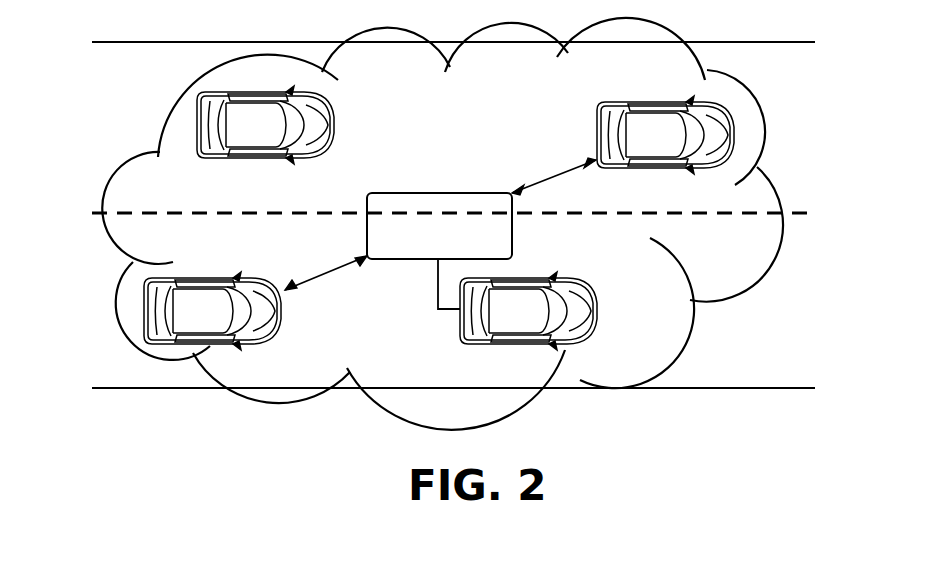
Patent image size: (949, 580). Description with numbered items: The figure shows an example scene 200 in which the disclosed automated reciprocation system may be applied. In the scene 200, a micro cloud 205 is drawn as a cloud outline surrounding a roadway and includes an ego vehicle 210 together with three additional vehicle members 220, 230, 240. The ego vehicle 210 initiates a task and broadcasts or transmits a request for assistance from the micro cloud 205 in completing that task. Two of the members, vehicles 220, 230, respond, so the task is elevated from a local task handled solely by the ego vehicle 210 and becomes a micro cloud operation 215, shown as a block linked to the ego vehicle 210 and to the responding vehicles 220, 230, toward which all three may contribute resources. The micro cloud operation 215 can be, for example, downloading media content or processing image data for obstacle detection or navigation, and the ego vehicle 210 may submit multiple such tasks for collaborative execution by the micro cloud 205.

The example scene 200 is at (287, 461).
The micro cloud 205 is at (743, 287).
The ego vehicle 210 is at (598, 305).
The micro cloud operation 215 is at (458, 248).
The vehicle member 220 is at (140, 318).
The vehicle member 230 is at (740, 128).
The vehicle member 240 is at (197, 127).